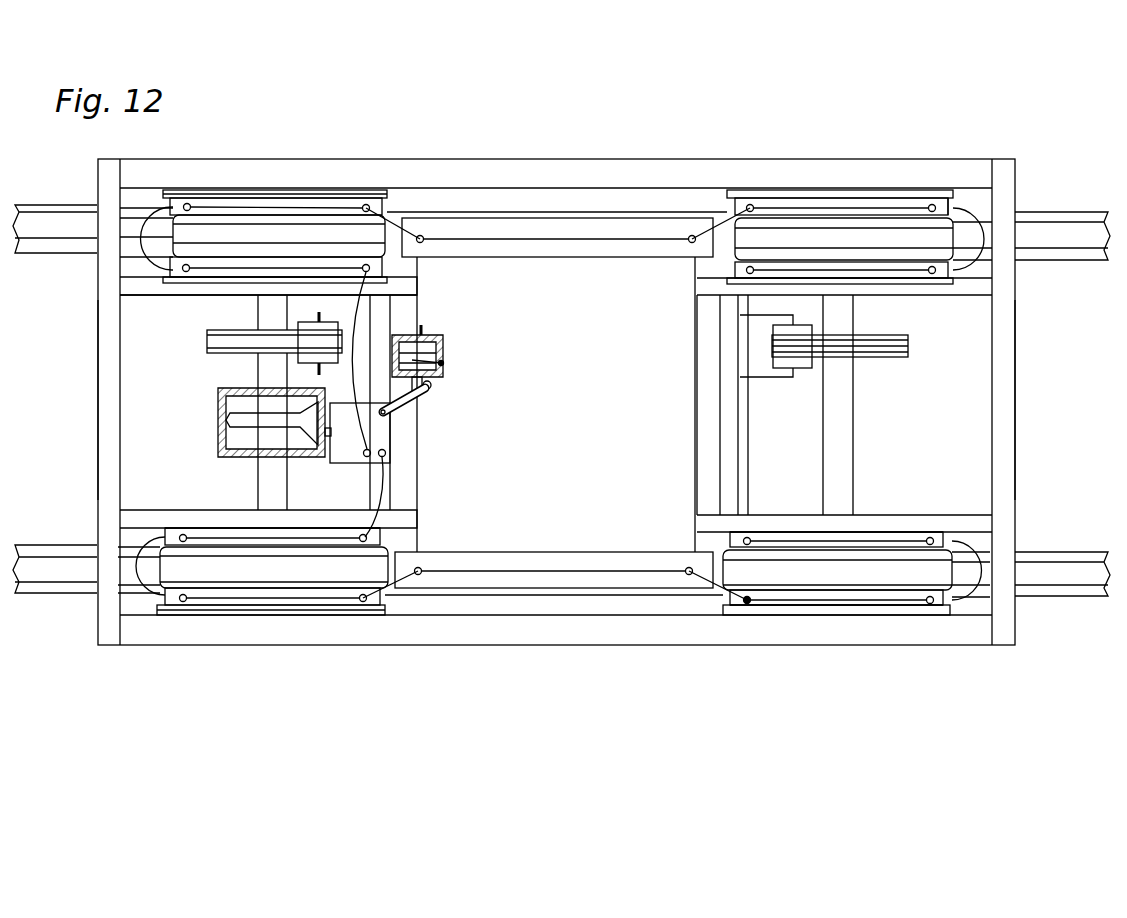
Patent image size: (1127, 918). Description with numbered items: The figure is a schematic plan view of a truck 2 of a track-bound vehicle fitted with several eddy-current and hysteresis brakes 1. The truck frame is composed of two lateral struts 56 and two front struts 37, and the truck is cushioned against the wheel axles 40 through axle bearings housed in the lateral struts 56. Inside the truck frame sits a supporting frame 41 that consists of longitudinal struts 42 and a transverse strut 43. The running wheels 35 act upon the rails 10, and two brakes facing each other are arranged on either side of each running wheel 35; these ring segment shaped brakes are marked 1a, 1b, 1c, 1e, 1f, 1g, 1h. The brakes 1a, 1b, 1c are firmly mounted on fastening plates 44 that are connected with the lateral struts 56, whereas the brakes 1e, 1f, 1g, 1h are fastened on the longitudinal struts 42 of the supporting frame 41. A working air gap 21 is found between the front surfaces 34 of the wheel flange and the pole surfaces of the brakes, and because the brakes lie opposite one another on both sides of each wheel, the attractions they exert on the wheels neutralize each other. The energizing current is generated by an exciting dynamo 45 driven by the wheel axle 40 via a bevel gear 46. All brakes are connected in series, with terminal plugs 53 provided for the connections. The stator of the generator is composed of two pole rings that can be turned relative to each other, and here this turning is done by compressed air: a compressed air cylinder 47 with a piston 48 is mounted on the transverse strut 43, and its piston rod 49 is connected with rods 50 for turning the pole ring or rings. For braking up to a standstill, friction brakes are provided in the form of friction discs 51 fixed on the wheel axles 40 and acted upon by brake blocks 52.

The eddy-current and hysteresis brake 1 is at (470, 227).
The ring segment shaped brake 1a is at (860, 213).
The ring segment shaped brake 1b is at (219, 205).
The ring segment shaped brake 1c is at (243, 605).
The ring segment shaped brake 1e is at (918, 275).
The ring segment shaped brake 1f is at (205, 272).
The ring segment shaped brake 1g is at (200, 535).
The ring segment shaped brake 1h is at (787, 535).
The truck 2 is at (590, 157).
The rail 10 is at (1050, 238).
The working air gap 21 is at (893, 590).
The front surface of the wheel flange 34 is at (950, 592).
The running wheel 35 is at (938, 233).
The front strut 37 is at (105, 460).
The wheel axle 40 is at (258, 368).
The supporting frame 41 is at (155, 293).
The longitudinal strut 42 is at (133, 288).
The transverse strut 43 is at (385, 314).
The fastening plate 44 is at (170, 190).
The exciting dynamo 45 is at (375, 437).
The bevel gear 46 is at (229, 418).
The compressed air cylinder 47 is at (443, 347).
The piston 48 is at (443, 364).
The piston rod 49 is at (431, 386).
The rod 50 is at (398, 402).
The friction disc 51 is at (878, 346).
The brake block 52 is at (803, 325).
The terminal plug 53 is at (747, 602).
The lateral strut 56 is at (313, 172).